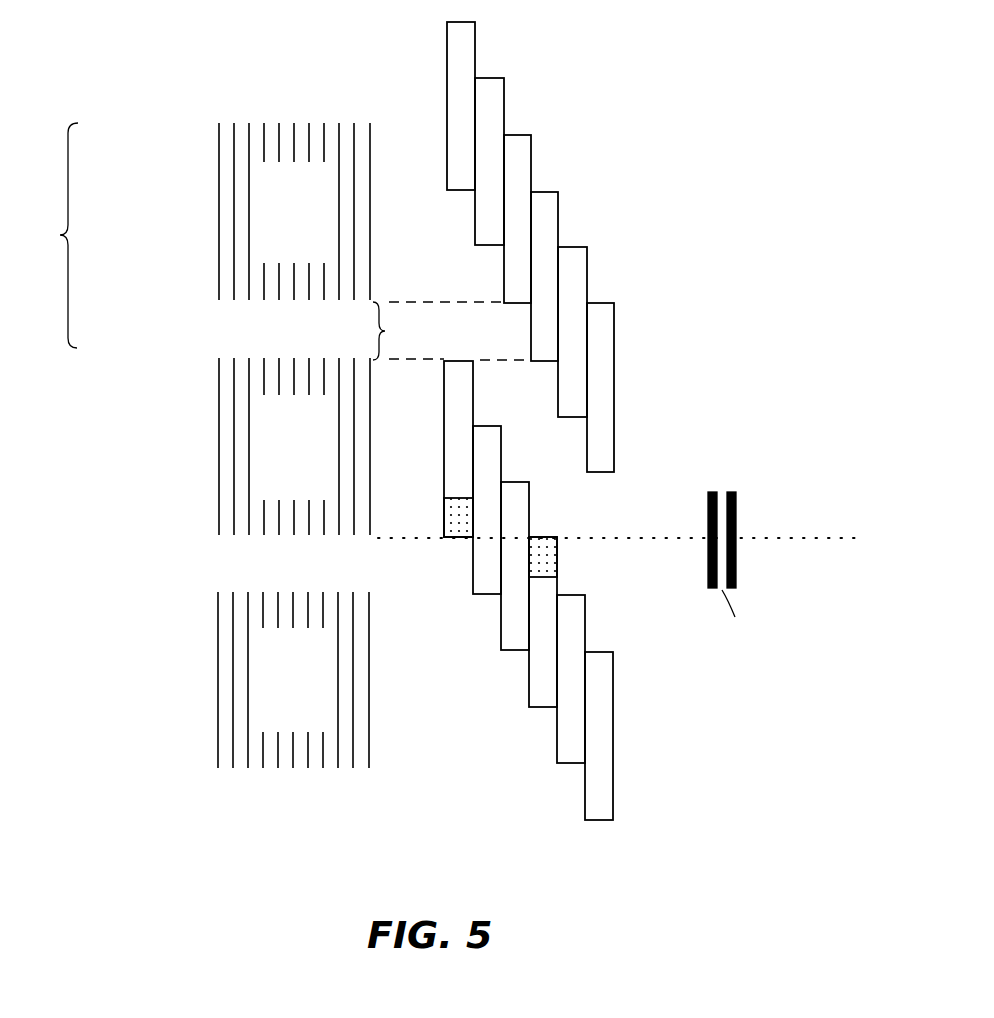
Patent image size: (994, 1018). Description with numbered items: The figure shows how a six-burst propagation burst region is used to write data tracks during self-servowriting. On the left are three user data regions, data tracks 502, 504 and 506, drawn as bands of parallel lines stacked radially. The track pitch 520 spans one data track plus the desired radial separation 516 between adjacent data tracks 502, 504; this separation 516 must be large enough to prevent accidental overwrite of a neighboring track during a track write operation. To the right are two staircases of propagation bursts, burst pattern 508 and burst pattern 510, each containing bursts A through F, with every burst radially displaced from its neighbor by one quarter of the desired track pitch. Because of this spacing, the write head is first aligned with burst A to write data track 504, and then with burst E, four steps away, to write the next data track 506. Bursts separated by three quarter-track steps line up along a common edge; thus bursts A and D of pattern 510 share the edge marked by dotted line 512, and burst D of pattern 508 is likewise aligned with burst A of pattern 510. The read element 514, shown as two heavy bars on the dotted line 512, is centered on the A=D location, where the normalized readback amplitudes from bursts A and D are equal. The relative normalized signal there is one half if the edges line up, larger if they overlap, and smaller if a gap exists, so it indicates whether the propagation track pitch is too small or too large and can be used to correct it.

The data track 502 is at (219, 186).
The data track 504 is at (219, 420).
The data track 506 is at (218, 653).
The burst pattern 508 is at (603, 196).
The burst pattern 510 is at (491, 659).
The dotted line 512 is at (653, 537).
The read element 514 is at (736, 514).
The radial separation 516 is at (451, 331).
The track pitch 520 is at (45, 235).